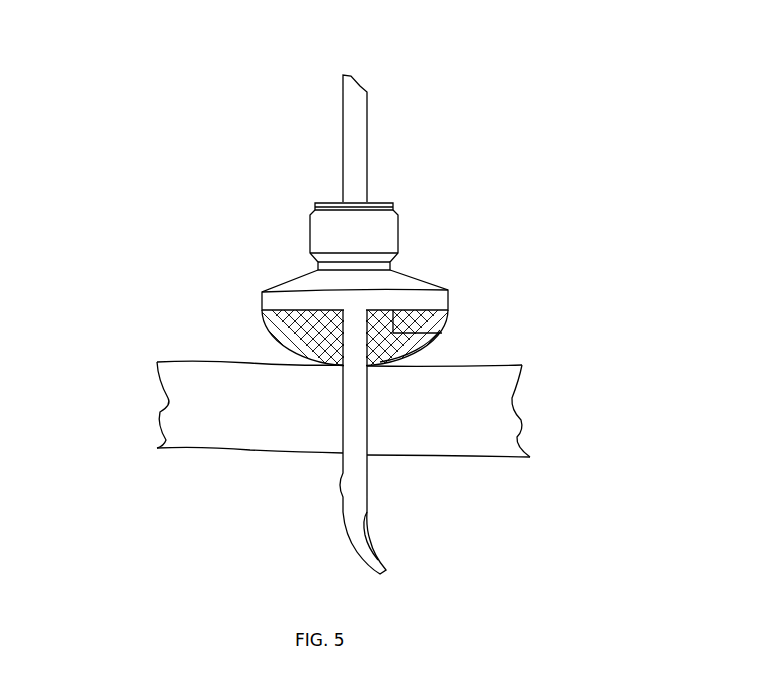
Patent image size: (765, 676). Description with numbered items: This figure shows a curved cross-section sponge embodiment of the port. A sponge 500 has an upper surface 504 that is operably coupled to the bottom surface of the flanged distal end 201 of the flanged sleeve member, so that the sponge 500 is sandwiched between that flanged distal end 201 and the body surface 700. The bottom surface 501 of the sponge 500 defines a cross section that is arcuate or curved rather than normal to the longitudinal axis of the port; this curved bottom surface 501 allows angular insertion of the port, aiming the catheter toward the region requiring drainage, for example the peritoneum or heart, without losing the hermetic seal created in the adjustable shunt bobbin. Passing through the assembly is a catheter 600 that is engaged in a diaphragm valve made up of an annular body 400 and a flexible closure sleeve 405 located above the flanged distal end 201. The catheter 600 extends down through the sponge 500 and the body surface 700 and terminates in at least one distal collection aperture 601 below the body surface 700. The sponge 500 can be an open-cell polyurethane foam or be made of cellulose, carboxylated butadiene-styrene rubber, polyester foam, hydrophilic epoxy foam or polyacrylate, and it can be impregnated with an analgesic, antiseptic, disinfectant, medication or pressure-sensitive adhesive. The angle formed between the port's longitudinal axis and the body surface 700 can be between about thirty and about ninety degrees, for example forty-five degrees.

The catheter 600 is at (357, 143).
The annular body 400 is at (357, 230).
The flexible closure sleeve 405 is at (317, 205).
The flanged distal end 201 is at (405, 303).
The sponge 500 is at (295, 317).
The upper surface 504 is at (393, 333).
The bottom surface 501 is at (420, 352).
The body surface 700 is at (210, 383).
The distal collection aperture 601 is at (340, 487).